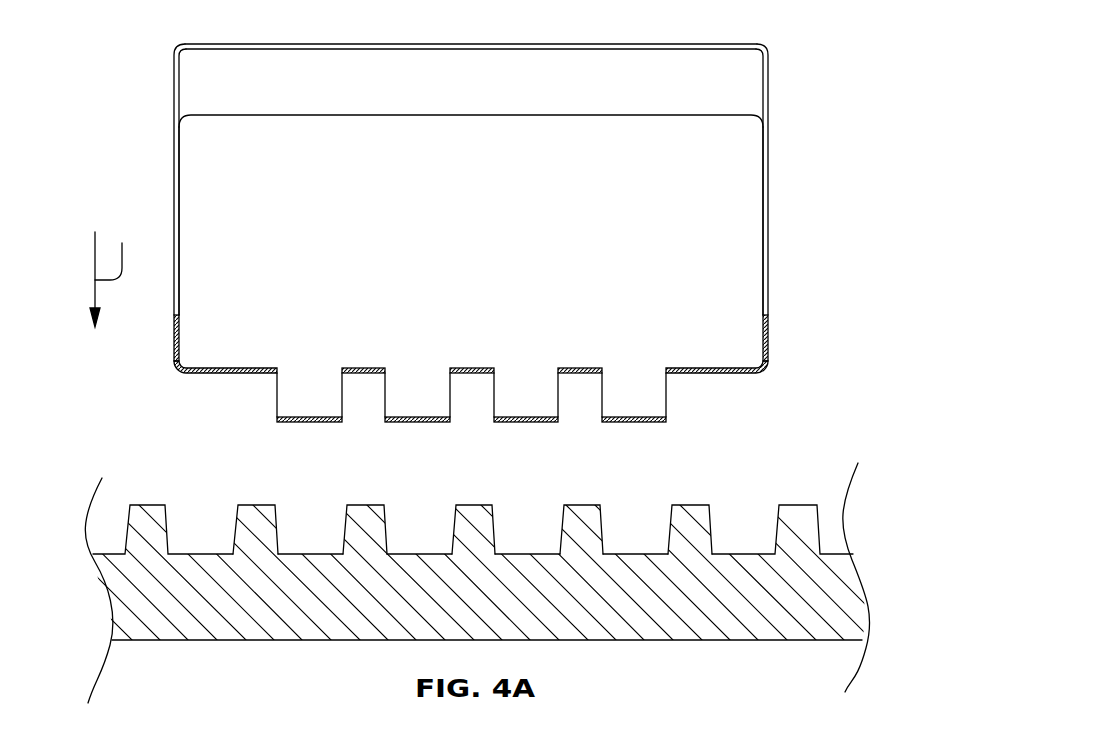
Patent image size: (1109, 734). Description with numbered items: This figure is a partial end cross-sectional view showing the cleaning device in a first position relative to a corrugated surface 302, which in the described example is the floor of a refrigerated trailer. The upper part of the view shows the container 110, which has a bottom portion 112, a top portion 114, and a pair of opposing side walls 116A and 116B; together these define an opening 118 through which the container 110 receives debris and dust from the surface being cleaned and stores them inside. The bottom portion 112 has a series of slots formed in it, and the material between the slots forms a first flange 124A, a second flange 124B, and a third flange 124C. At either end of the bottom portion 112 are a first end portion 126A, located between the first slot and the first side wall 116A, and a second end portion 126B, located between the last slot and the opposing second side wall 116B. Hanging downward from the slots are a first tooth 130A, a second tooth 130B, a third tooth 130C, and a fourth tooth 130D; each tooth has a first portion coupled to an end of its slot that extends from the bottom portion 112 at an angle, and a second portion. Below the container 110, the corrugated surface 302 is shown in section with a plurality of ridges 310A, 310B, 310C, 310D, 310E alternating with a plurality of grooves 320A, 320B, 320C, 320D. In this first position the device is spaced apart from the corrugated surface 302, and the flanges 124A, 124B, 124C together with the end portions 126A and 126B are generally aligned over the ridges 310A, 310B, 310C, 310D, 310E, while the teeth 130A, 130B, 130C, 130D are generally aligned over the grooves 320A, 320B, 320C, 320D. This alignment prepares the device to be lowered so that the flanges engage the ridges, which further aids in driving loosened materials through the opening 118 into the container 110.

The container 110 is at (158, 44).
The bottom portion 112 is at (769, 360).
The top portion 114 is at (722, 115).
The first side wall 116A is at (174, 156).
The second side wall 116B is at (769, 158).
The opening 118 is at (772, 139).
The first flange 124A is at (360, 368).
The second flange 124B is at (468, 368).
The third flange 124C is at (577, 368).
The first end portion 126A is at (233, 368).
The second end portion 126B is at (684, 368).
The first tooth 130A is at (304, 416).
The second tooth 130B is at (414, 416).
The third tooth 130C is at (523, 416).
The fourth tooth 130D is at (631, 416).
The corrugated surface 302 is at (708, 633).
The first ridge 310A is at (253, 505).
The second ridge 310B is at (361, 505).
The third ridge 310C is at (469, 505).
The fourth ridge 310D is at (578, 505).
The fifth ridge 310E is at (686, 505).
The first groove 320A is at (310, 554).
The second groove 320B is at (418, 554).
The third groove 320C is at (526, 554).
The fourth groove 320D is at (634, 554).